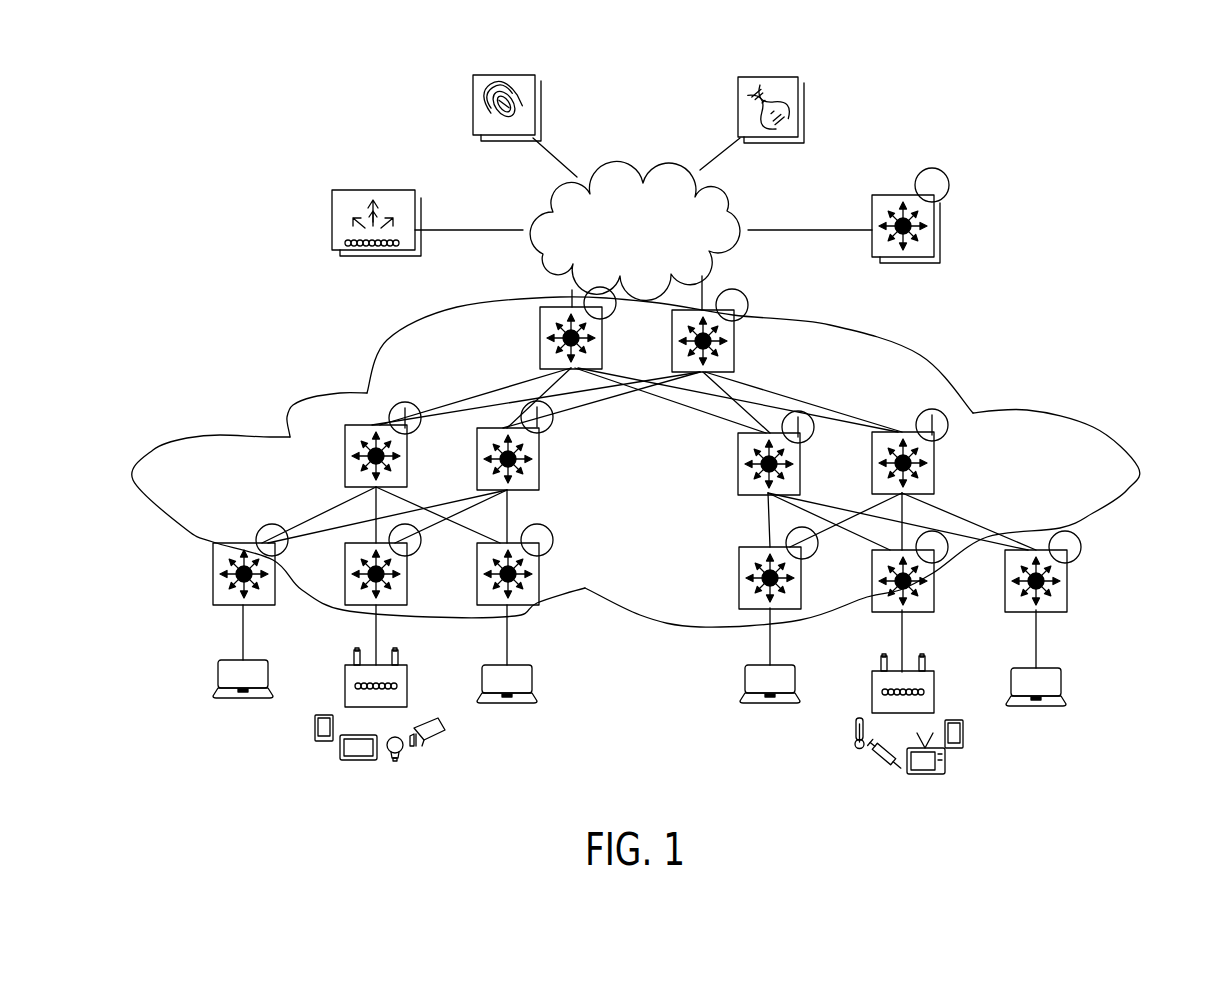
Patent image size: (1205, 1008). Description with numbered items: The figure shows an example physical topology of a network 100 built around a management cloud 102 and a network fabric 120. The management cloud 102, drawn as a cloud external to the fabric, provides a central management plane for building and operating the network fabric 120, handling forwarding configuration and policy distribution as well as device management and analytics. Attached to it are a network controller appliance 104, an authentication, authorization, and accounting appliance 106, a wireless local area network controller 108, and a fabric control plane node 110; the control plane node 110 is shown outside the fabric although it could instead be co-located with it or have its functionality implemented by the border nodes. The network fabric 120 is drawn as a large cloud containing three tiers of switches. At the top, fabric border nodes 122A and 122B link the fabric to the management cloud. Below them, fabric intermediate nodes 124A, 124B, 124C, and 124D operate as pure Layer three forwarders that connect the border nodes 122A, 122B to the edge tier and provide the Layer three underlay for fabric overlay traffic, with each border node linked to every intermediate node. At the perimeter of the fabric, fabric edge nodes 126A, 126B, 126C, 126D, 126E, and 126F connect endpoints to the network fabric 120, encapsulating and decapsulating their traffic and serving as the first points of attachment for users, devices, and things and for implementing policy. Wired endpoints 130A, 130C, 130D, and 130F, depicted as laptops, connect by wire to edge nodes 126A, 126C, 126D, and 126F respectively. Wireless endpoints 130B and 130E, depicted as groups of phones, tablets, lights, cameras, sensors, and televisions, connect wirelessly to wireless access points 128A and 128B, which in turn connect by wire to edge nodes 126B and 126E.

The network 100 is at (1118, 124).
The management cloud 102 is at (648, 277).
The network controller appliance 104 is at (805, 132).
The authentication, authorization, and accounting (AAA) appliance 106 is at (473, 124).
The wireless local area network controller (WLC) 108 is at (330, 236).
The fabric control plane node 110 is at (940, 254).
The network fabric 120 is at (648, 504).
The fabric border node 122A is at (540, 342).
The fabric border node 122B is at (749, 303).
The fabric intermediate node 124A is at (353, 423).
The fabric intermediate node 124B is at (540, 486).
The fabric intermediate node 124C is at (740, 485).
The fabric intermediate node 124D is at (934, 473).
The fabric edge node 126A is at (213, 589).
The fabric edge node 126B is at (352, 606).
The fabric edge node 126C is at (528, 608).
The fabric edge node 126D is at (750, 610).
The fabric edge node 126E is at (918, 612).
The fabric edge node 126F is at (1068, 594).
The wireless access point 128A is at (408, 673).
The wireless access point 128B is at (872, 680).
The wired endpoint 130A is at (216, 682).
The wireless endpoint 130B is at (443, 767).
The wired endpoint 130C is at (535, 690).
The wired endpoint 130D is at (748, 686).
The wireless endpoint 130E is at (968, 767).
The wired endpoint 130F is at (1064, 690).